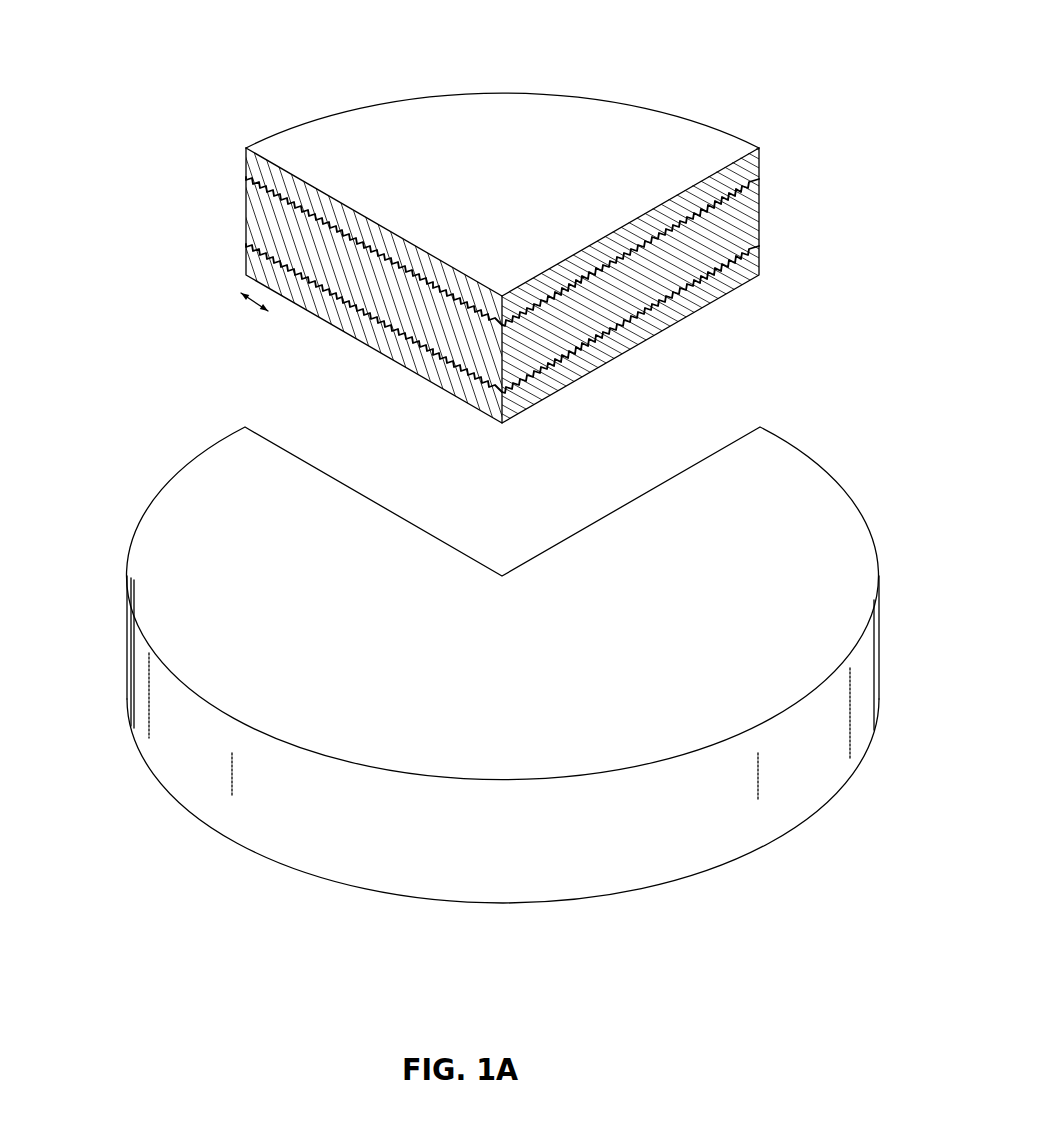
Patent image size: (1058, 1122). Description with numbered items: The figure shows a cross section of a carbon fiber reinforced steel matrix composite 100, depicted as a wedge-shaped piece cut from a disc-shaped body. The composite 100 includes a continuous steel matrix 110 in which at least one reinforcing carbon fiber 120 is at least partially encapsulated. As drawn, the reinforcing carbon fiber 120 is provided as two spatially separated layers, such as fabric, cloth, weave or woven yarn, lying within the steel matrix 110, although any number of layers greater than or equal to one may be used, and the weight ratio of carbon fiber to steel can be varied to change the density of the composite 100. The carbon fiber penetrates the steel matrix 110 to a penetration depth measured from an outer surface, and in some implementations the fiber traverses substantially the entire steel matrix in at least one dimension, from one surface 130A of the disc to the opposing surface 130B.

The carbon fiber reinforced steel matrix composite 100 is at (162, 294).
The steel matrix 110 is at (762, 214).
The reinforcing carbon fiber 120 is at (762, 191).
The surface 130A is at (114, 656).
The opposing surface 130B is at (892, 657).